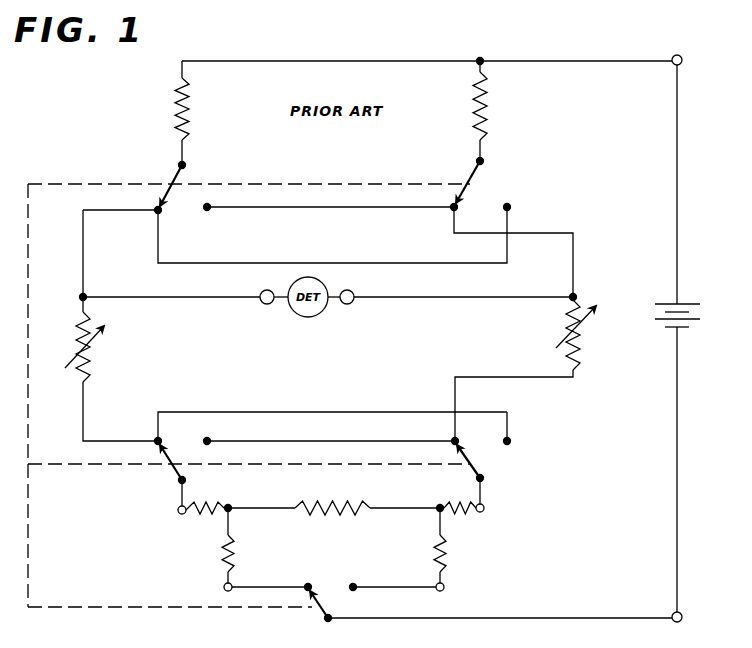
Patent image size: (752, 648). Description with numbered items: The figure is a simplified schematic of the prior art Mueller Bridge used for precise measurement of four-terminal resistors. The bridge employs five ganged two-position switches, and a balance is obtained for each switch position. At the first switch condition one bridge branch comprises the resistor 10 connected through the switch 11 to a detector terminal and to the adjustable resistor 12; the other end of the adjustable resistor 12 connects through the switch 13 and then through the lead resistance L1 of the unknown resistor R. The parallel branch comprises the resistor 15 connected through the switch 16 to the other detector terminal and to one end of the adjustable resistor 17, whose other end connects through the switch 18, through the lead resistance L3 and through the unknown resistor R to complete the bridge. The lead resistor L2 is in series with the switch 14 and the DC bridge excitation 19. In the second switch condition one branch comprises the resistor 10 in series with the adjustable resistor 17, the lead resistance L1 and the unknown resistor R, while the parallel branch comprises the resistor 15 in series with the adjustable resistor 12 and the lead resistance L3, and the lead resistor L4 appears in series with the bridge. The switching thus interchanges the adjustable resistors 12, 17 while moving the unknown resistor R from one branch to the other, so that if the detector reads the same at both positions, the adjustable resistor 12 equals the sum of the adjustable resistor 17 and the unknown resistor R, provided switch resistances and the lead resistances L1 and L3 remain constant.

The resistor 10 is at (190, 126).
The switch 11 is at (172, 182).
The adjustable resistor 12 is at (92, 371).
The switch 13 is at (170, 470).
The switch 14 is at (320, 612).
The resistor 15 is at (490, 114).
The switch 16 is at (466, 182).
The adjustable resistor 17 is at (560, 318).
The switch 18 is at (490, 466).
The DC bridge excitation 19 is at (694, 302).
The lead resistance L1 is at (212, 504).
The lead resistor L2 is at (222, 552).
The lead resistance L3 is at (470, 513).
The lead resistor L4 is at (436, 550).
The unknown resistor R is at (334, 504).